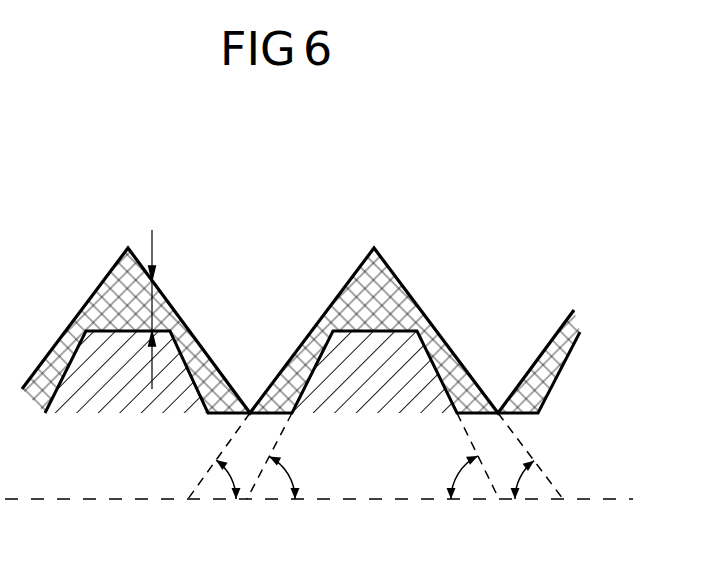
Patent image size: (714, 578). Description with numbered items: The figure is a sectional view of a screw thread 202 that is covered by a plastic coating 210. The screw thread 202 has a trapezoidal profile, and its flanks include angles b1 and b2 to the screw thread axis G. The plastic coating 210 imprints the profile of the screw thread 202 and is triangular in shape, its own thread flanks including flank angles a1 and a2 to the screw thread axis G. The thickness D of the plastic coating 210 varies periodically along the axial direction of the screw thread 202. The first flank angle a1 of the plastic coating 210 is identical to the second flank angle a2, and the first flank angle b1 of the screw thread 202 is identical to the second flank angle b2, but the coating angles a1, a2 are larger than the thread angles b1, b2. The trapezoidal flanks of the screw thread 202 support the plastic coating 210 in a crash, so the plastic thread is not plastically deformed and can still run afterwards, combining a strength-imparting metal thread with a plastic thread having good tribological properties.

The plastic coating 210 is at (390, 300).
The screw thread 202 is at (377, 382).
The thickness D is at (164, 309).
The screw thread axis G is at (334, 501).
The first flank angle of the plastic coating a1 is at (208, 475).
The first flank angle of the screw thread b1 is at (264, 475).
The second flank angle of the screw thread b2 is at (469, 475).
The second flank angle of the plastic coating a2 is at (540, 475).